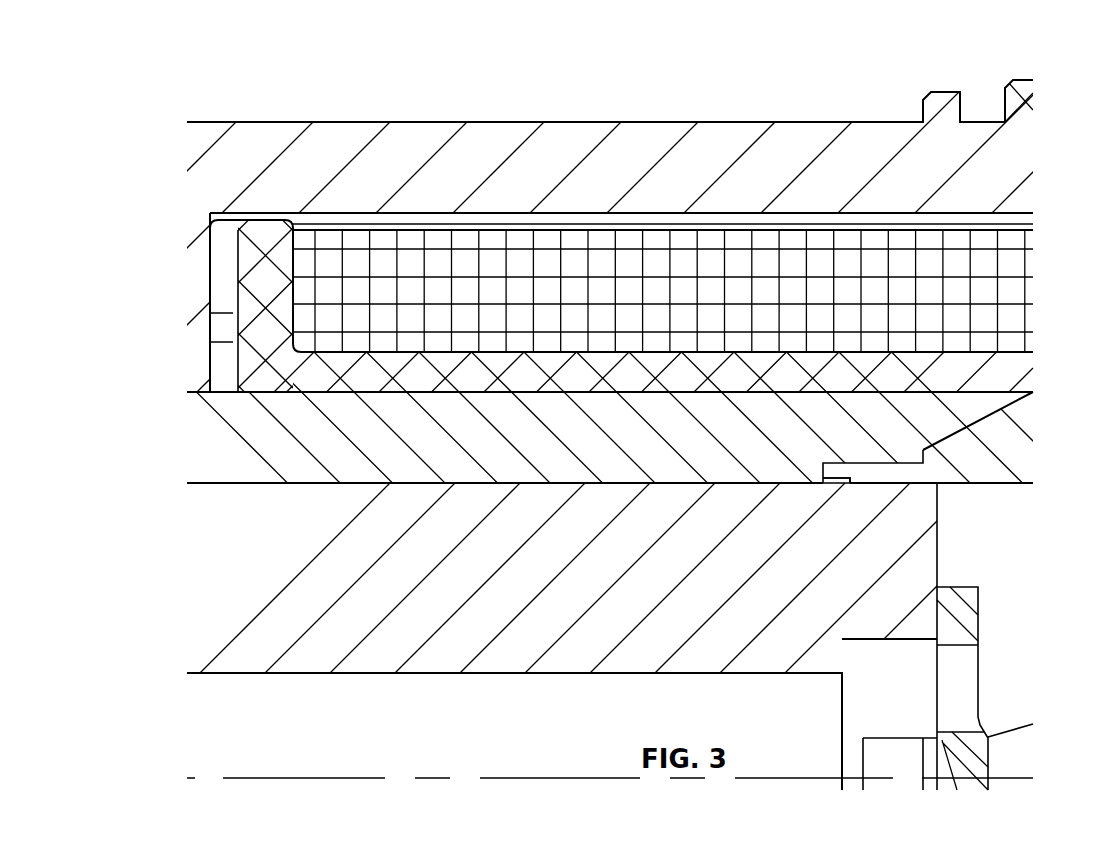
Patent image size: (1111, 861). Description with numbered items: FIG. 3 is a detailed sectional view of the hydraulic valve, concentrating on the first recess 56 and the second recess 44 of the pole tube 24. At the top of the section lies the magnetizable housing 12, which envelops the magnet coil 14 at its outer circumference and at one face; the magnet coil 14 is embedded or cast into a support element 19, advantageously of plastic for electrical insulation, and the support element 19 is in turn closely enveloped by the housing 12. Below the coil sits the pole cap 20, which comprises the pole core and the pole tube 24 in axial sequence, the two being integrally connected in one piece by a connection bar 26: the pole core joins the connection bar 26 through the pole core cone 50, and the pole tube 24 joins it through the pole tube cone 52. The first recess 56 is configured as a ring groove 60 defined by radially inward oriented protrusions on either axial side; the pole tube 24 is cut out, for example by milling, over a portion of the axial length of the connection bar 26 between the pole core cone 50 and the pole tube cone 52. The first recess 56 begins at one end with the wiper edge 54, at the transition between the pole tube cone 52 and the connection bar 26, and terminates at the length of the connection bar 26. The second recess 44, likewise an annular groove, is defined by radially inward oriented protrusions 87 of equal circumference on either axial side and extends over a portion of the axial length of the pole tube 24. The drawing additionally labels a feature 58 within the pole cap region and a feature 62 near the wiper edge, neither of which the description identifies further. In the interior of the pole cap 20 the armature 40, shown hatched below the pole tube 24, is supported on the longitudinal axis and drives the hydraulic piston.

The housing 12 is at (253, 167).
The magnet coil 14 is at (676, 252).
The support element 19 is at (263, 253).
The pole cap 20 is at (452, 417).
The pole tube 24 is at (638, 410).
The connection bar 26 is at (907, 483).
The armature 40 is at (287, 545).
The second recess 44 is at (528, 480).
The pole core cone 50 is at (977, 435).
The pole tube cone 52 is at (768, 415).
The wiper edge 54 is at (822, 483).
The first recess 56 is at (840, 483).
The bottom surface 58 is at (415, 483).
The ring groove 60 is at (836, 480).
The gap 62 is at (873, 472).
The radially inward oriented protrusions 87 is at (233, 483).